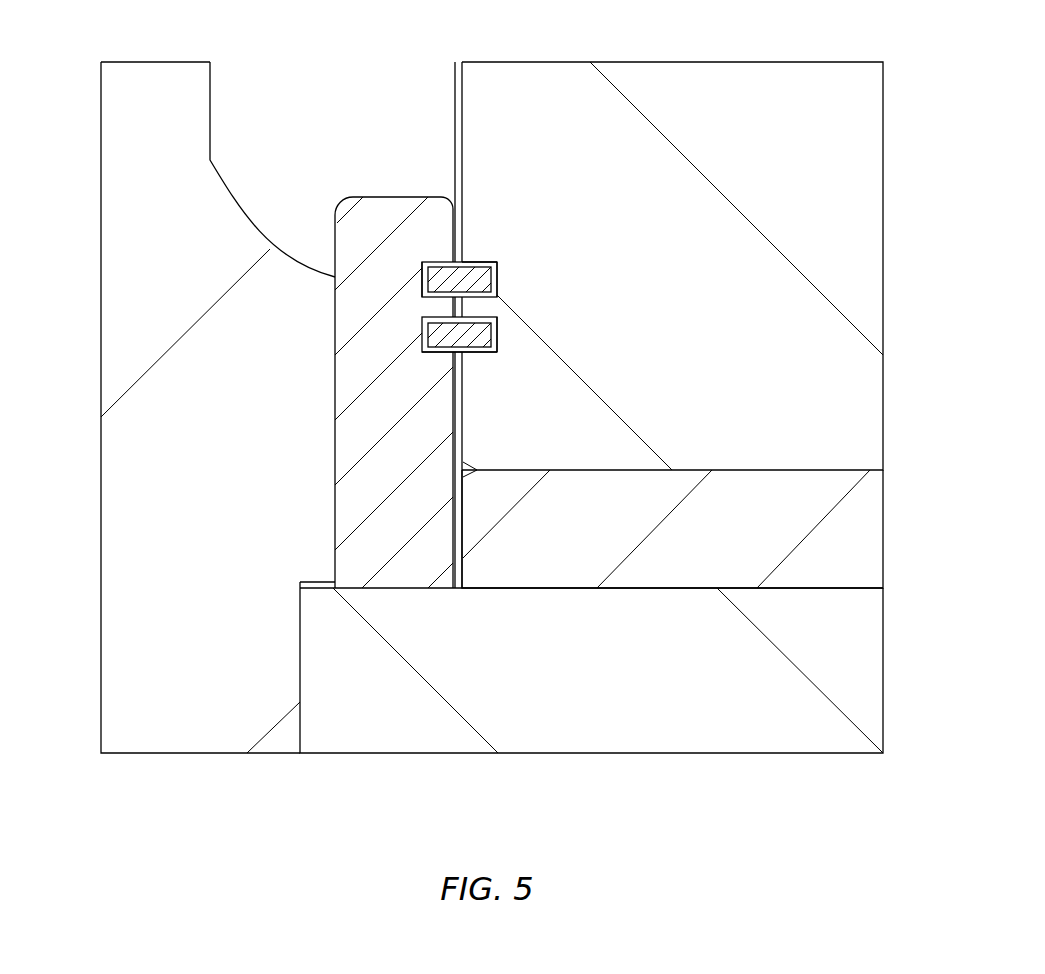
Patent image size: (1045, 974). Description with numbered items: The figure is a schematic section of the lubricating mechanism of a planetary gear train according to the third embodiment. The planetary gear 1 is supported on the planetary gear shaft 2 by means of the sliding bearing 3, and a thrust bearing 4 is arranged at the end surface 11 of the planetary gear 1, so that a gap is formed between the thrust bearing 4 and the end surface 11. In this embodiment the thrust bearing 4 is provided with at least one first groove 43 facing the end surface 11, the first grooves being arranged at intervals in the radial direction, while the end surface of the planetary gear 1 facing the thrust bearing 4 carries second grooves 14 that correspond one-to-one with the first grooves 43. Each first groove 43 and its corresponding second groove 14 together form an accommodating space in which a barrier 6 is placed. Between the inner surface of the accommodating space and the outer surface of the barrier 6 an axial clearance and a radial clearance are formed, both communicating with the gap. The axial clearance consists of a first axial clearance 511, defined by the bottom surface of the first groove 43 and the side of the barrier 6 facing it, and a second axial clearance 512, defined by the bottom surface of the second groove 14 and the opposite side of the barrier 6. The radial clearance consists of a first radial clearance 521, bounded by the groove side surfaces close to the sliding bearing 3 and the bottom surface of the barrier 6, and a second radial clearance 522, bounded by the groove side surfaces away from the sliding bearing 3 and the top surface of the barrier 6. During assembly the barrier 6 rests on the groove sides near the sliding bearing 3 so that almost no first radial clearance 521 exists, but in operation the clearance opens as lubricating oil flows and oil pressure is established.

The planetary gear 1 is at (815, 150).
The end surface 11 is at (455, 108).
The second groove 14 is at (497, 273).
The planetary gear shaft 2 is at (768, 688).
The sliding bearing 3 is at (828, 553).
The thrust bearing 4 is at (415, 520).
The first groove 43 is at (421, 278).
The barrier 6 is at (473, 262).
The first axial clearance 511 is at (421, 335).
The second axial clearance 512 is at (498, 334).
The first radial clearance 521 is at (440, 354).
The second radial clearance 522 is at (437, 261).